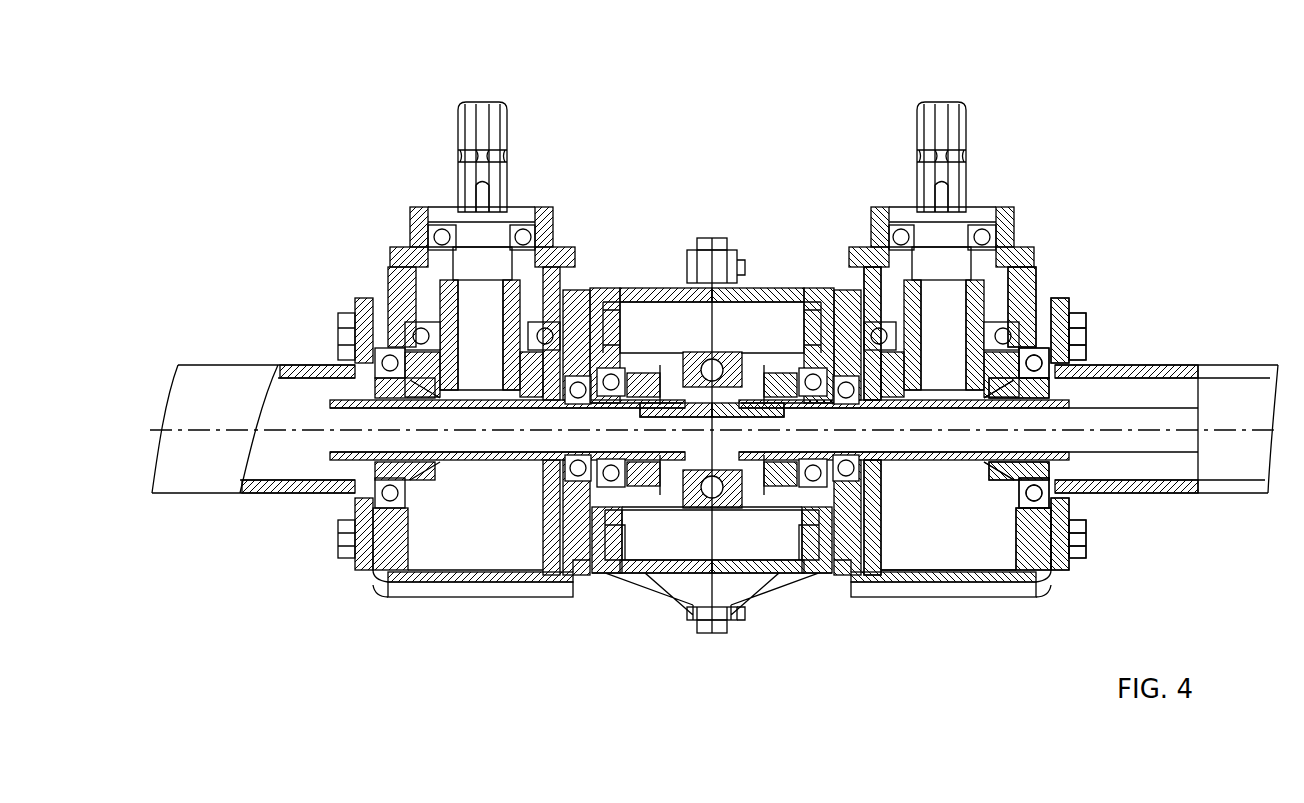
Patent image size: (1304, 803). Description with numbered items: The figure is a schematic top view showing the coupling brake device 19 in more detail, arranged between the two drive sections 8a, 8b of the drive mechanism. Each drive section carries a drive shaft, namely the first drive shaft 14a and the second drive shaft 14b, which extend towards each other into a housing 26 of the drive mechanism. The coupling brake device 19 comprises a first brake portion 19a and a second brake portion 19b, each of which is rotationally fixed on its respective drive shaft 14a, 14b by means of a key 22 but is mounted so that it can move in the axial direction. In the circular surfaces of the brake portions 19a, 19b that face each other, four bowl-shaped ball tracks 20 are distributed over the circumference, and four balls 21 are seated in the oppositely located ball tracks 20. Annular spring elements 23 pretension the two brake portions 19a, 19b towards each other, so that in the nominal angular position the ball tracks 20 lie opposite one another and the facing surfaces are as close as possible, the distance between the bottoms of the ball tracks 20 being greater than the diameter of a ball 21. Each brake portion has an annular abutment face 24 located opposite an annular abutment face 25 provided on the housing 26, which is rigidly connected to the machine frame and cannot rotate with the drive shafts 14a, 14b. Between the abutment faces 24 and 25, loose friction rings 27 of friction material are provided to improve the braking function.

The drive section 8a is at (357, 246).
The drive section 8b is at (1067, 246).
The first drive shaft 14a is at (467, 430).
The second drive shaft 14b is at (957, 430).
The coupling brake device 19 is at (683, 481).
The first brake portion 19a is at (598, 527).
The second brake portion 19b is at (817, 527).
The ball track 20 is at (643, 385).
The ball 21 is at (712, 363).
The key 22 is at (505, 305).
The annular spring element 23 is at (577, 373).
The annular abutment face 24 is at (560, 235).
The annular abutment face 25 is at (598, 523).
The housing 26 is at (560, 555).
The friction ring 27 is at (840, 585).